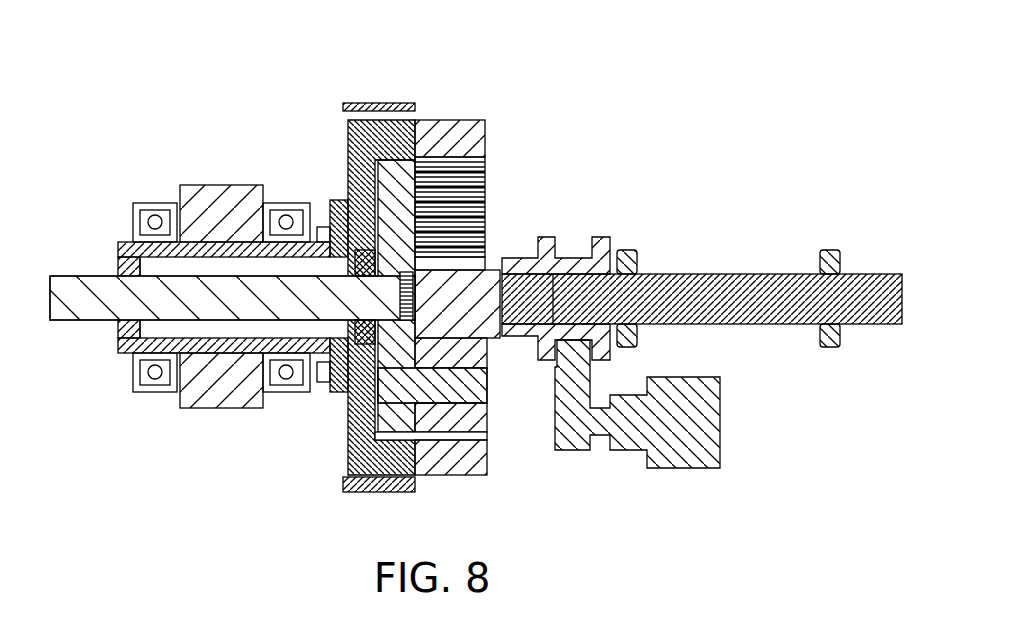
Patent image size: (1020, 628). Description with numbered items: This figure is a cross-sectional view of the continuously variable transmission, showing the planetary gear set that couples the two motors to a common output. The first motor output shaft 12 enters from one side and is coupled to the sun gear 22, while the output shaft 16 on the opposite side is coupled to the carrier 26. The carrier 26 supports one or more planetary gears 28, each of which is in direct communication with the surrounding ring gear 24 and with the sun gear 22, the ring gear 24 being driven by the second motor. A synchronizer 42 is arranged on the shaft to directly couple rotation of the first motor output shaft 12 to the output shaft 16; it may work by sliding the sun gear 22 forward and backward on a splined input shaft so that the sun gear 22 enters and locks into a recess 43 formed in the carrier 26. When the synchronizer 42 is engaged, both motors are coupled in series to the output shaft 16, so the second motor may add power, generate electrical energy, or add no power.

The first motor output shaft 12 is at (848, 290).
The output shaft 16 is at (87, 302).
The sun gear 22 is at (490, 266).
The ring gear 24 is at (465, 134).
The carrier 26 is at (392, 172).
The planetary gear 28 is at (490, 412).
The synchronizer 42 is at (554, 258).
The recess 43 is at (364, 342).